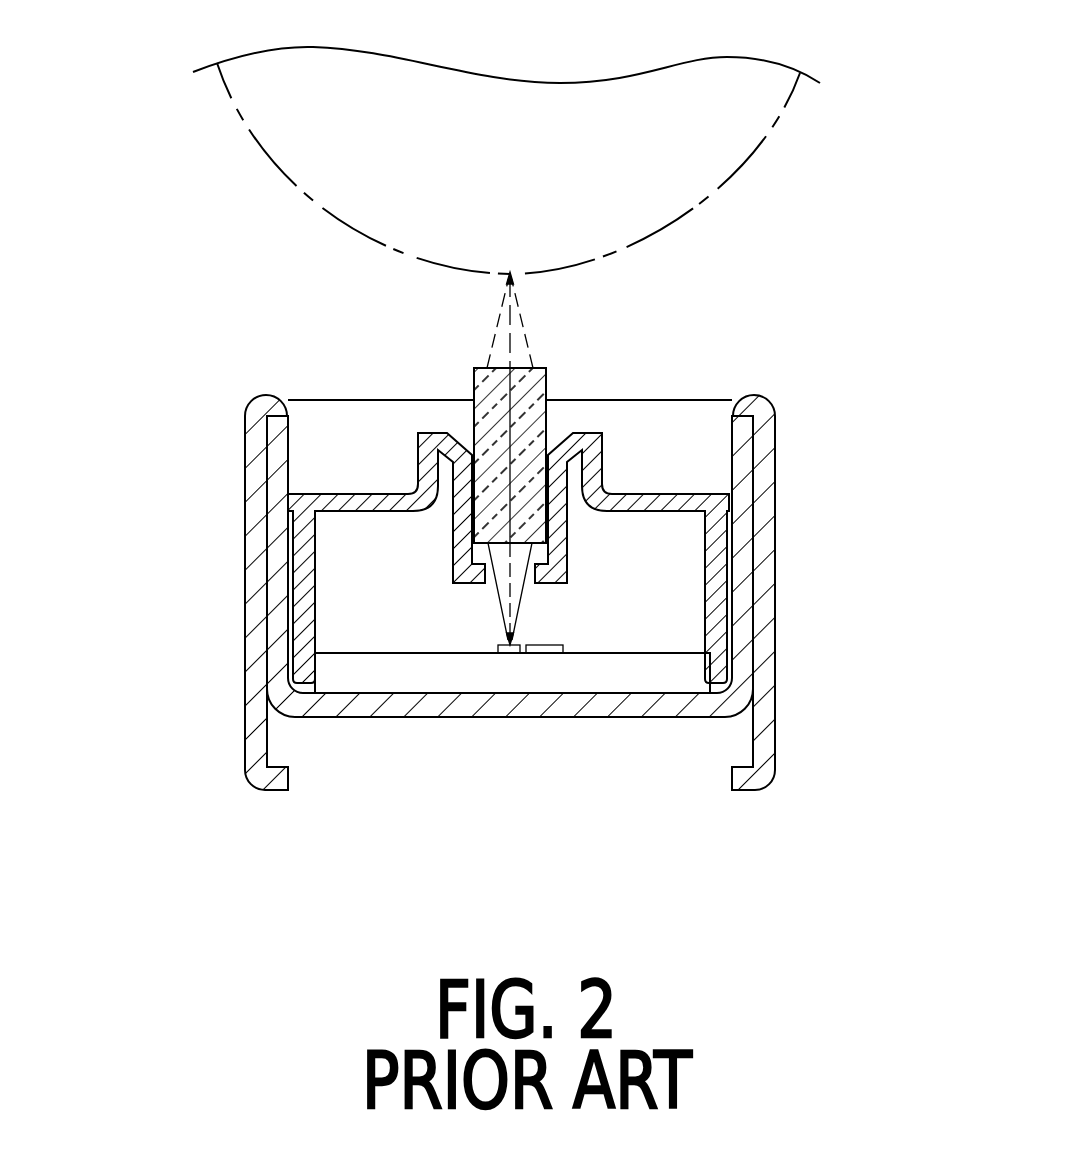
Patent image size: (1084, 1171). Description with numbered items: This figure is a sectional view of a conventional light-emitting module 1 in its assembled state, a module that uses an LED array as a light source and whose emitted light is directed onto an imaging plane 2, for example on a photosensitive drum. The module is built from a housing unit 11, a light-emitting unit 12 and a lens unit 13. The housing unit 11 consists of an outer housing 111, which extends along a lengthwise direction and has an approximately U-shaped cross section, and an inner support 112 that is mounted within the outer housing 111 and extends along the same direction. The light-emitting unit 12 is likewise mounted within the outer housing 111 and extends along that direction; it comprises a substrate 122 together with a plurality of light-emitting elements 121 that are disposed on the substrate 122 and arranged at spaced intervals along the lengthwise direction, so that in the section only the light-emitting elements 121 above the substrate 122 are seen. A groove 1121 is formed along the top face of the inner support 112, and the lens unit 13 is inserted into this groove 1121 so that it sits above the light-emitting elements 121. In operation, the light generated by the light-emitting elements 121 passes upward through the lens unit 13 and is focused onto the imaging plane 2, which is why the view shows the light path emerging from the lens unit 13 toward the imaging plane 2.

The light-emitting module 1 is at (506, 583).
The imaging plane 2 is at (755, 153).
The housing unit 11 is at (245, 653).
The outer housing 111 is at (253, 518).
The inner support 112 is at (715, 627).
The groove 1121 is at (545, 553).
The light-emitting unit 12 is at (577, 695).
The light-emitting elements 121 is at (487, 653).
The substrate 122 is at (362, 673).
The lens unit 13 is at (548, 375).